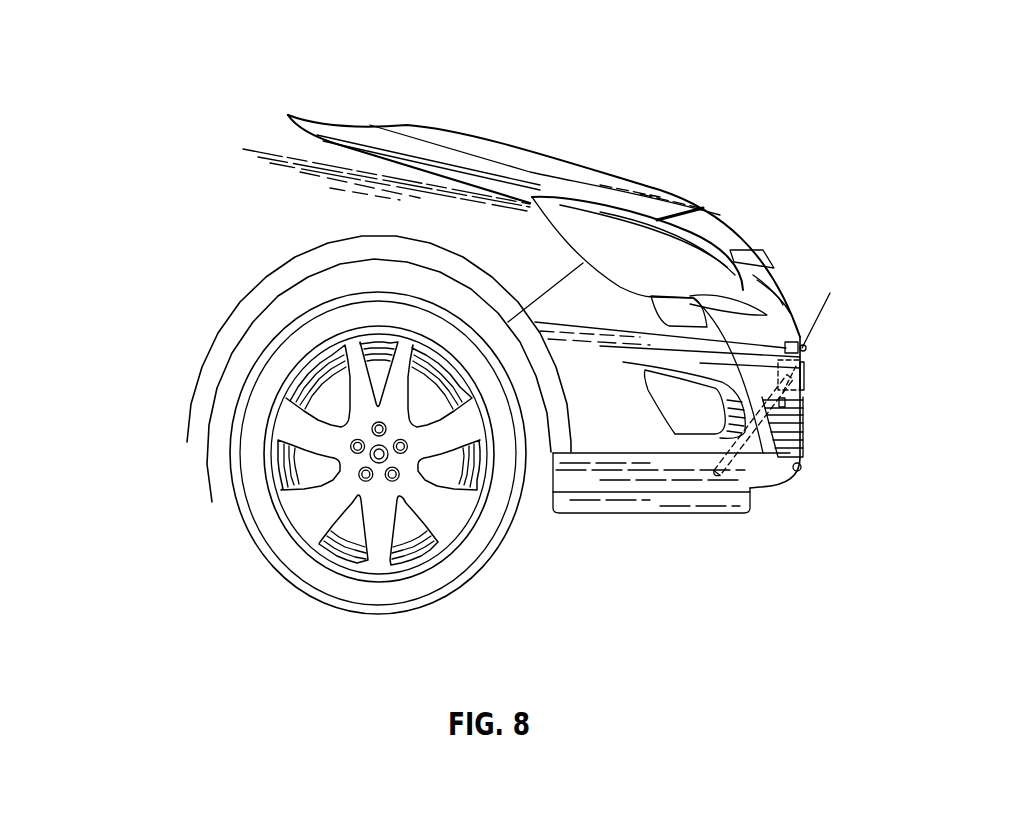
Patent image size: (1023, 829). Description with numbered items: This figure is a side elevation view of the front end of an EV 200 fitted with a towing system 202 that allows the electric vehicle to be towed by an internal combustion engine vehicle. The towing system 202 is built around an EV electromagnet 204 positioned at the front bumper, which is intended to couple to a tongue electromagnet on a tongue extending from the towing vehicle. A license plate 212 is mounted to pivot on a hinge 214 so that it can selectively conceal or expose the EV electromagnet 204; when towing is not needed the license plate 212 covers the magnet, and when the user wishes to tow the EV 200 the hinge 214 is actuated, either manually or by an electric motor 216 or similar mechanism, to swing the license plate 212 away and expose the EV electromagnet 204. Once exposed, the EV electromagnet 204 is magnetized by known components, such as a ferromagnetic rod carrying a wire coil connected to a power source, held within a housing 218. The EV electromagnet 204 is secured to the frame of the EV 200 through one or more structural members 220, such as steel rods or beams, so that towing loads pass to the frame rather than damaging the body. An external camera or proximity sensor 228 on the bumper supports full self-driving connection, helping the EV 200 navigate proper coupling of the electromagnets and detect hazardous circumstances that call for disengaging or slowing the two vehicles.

The EV 200 is at (468, 138).
The towing system 202 is at (905, 235).
The EV electromagnet 204 is at (805, 375).
The license plate 212 is at (825, 313).
The hinge 214 is at (805, 349).
The electric motor 216 is at (803, 349).
The housing 218 is at (800, 395).
The structural member 220 is at (773, 482).
The sensor 228 is at (800, 467).